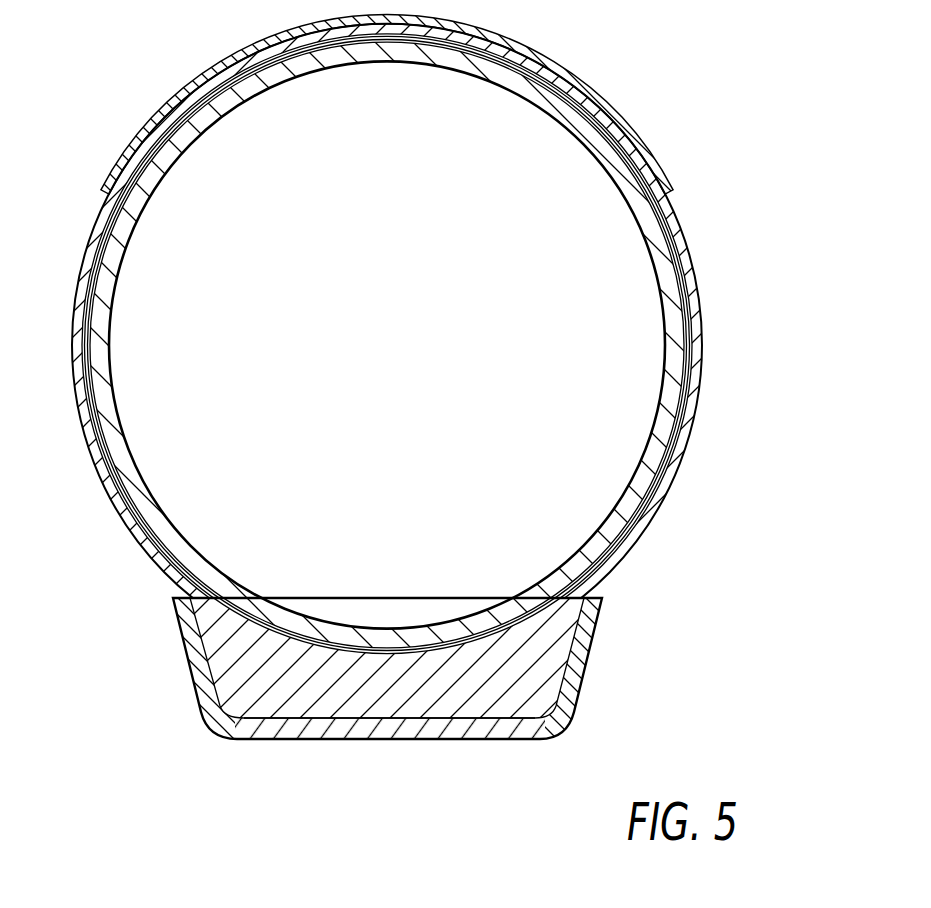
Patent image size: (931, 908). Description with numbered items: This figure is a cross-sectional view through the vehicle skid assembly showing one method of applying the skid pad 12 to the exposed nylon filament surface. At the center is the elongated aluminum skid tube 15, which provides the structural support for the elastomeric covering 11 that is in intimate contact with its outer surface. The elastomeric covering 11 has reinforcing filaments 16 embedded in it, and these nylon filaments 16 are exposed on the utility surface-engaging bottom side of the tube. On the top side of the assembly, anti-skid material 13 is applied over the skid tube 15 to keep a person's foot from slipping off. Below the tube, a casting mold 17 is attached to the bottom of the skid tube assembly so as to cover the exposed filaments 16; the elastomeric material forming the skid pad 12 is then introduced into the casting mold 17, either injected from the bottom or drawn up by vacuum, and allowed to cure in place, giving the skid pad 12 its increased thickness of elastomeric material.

The elastomeric covering 11 is at (690, 430).
The skid pad 12 is at (229, 688).
The anti-skid material 13 is at (628, 131).
The skid tube 15 is at (125, 392).
The reinforcing filaments 16 is at (680, 257).
The casting mold 17 is at (527, 741).